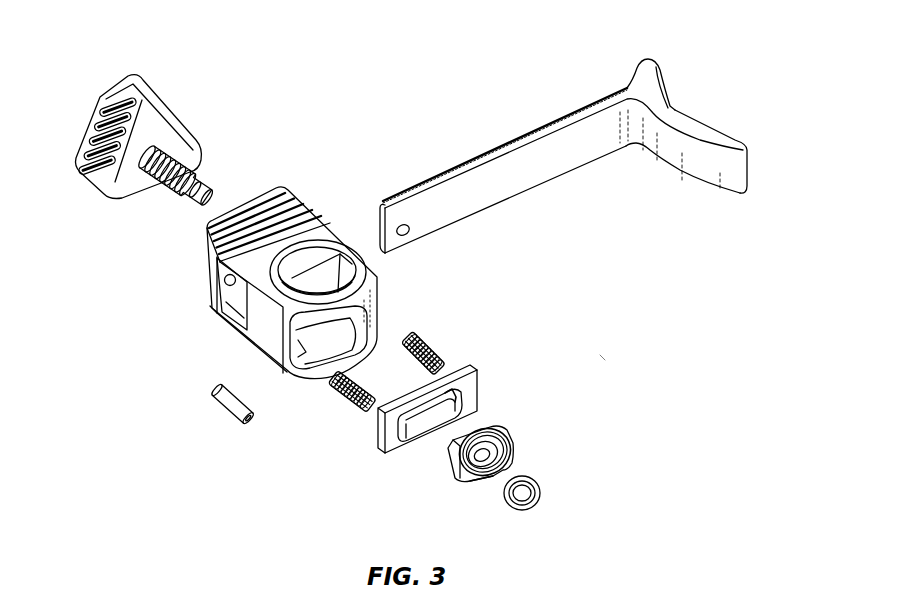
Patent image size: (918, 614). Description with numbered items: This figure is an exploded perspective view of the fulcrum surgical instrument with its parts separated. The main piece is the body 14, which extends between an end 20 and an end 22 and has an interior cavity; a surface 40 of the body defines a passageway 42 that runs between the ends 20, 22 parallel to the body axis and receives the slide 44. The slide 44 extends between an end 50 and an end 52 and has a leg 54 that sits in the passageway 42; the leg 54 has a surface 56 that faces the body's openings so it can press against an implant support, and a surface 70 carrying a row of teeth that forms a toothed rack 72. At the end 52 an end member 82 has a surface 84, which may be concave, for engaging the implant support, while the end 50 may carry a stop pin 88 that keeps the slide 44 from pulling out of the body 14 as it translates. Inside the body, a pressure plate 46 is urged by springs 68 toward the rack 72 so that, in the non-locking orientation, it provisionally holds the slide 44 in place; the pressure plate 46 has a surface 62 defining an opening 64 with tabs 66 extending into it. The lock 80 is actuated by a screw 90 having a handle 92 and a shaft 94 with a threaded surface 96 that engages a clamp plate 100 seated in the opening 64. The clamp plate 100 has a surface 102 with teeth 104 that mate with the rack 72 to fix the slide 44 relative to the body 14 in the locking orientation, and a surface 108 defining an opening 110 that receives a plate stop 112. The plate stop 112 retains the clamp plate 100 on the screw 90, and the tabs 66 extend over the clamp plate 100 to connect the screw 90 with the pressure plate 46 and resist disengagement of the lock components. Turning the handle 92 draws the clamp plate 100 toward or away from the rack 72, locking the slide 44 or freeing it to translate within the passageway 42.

The body 14 is at (255, 263).
The end 20 is at (207, 270).
The end 22 is at (360, 213).
The surface 40 is at (190, 308).
The passageway 42 is at (220, 290).
The slide 44 is at (583, 150).
The pressure plate 46 is at (455, 416).
The end 50 is at (382, 205).
The end 52 is at (663, 90).
The leg 54 is at (583, 150).
The surface 56 is at (493, 190).
The surface 62 is at (429, 416).
The opening 64 is at (423, 420).
The tabs 66 is at (470, 370).
The springs 68 is at (437, 342).
The surface 70 is at (470, 163).
The toothed rack 72 is at (530, 130).
The lock 80 is at (604, 355).
The end member 82 is at (733, 140).
The surface 84 is at (693, 127).
The stop pin 88 is at (230, 407).
The screw 90 is at (143, 125).
The handle 92 is at (78, 160).
The shaft 94 is at (179, 182).
The threaded surface 96 is at (188, 170).
The clamp plate 100 is at (495, 463).
The surface 102 is at (467, 477).
The teeth 104 is at (513, 460).
The surface 108 is at (480, 475).
The opening 110 is at (500, 427).
The plate stop 112 is at (537, 490).